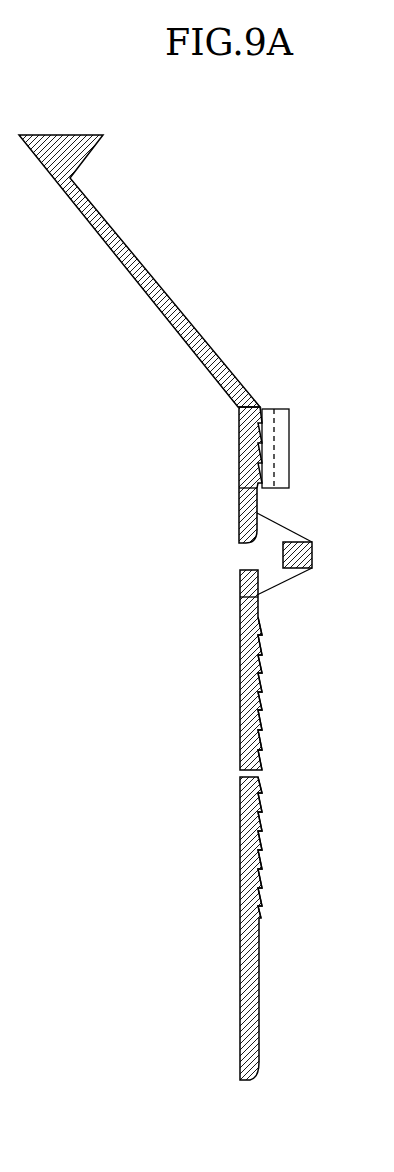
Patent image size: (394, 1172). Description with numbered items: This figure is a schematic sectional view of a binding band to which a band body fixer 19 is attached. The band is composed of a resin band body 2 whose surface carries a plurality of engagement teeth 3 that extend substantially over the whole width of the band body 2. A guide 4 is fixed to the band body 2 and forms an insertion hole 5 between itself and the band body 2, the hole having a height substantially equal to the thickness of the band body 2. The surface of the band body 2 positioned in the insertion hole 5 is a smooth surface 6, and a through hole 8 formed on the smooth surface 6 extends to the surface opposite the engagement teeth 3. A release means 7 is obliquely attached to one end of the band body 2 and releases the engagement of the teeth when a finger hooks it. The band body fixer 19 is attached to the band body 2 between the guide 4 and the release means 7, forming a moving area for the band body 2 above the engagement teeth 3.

The band body 2 is at (240, 884).
The engagement teeth 3 is at (262, 891).
The guide 4 is at (312, 556).
The insertion hole 5 is at (286, 534).
The smooth surface 6 is at (257, 505).
The release means 7 is at (135, 252).
The through hole 8 is at (236, 552).
The band body fixer 19 is at (289, 424).